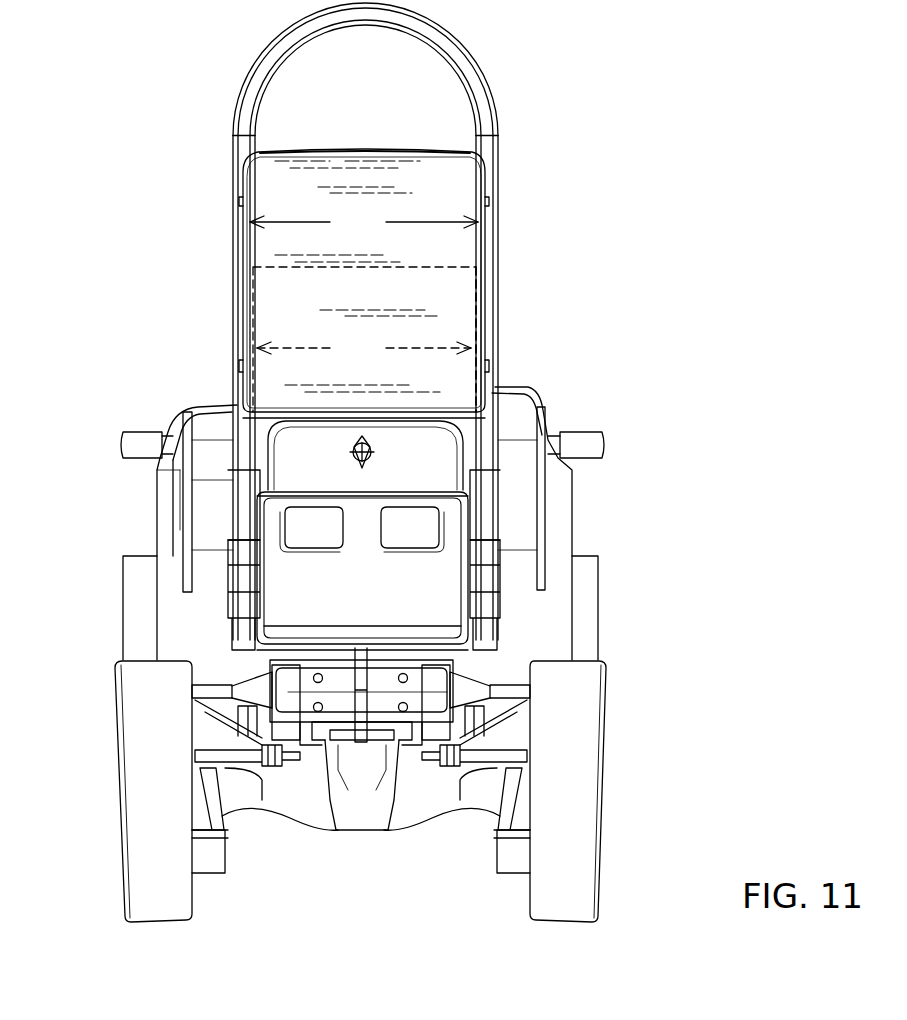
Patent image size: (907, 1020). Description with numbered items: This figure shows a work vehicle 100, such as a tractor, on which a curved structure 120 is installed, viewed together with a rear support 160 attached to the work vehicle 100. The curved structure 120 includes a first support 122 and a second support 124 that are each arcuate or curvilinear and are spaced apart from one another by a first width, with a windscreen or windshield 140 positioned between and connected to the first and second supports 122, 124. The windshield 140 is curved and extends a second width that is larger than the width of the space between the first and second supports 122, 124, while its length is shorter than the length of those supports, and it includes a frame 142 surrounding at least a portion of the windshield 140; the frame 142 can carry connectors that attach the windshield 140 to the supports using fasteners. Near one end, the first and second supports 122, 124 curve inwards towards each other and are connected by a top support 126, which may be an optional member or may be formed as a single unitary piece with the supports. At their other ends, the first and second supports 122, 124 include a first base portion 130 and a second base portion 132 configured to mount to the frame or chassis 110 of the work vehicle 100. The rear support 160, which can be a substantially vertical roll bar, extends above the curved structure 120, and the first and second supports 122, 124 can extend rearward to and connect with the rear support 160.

The work vehicle 100 is at (143, 128).
The frame or chassis 110 is at (360, 846).
The curved structure 120 is at (205, 198).
The first support 122 is at (497, 277).
The second support 124 is at (233, 298).
The top support 126 is at (356, 148).
The first base portion 130 is at (483, 478).
The second base portion 132 is at (235, 478).
The windscreen or windshield 140 is at (455, 289).
The frame 142 is at (483, 303).
The rear support 160 is at (470, 73).